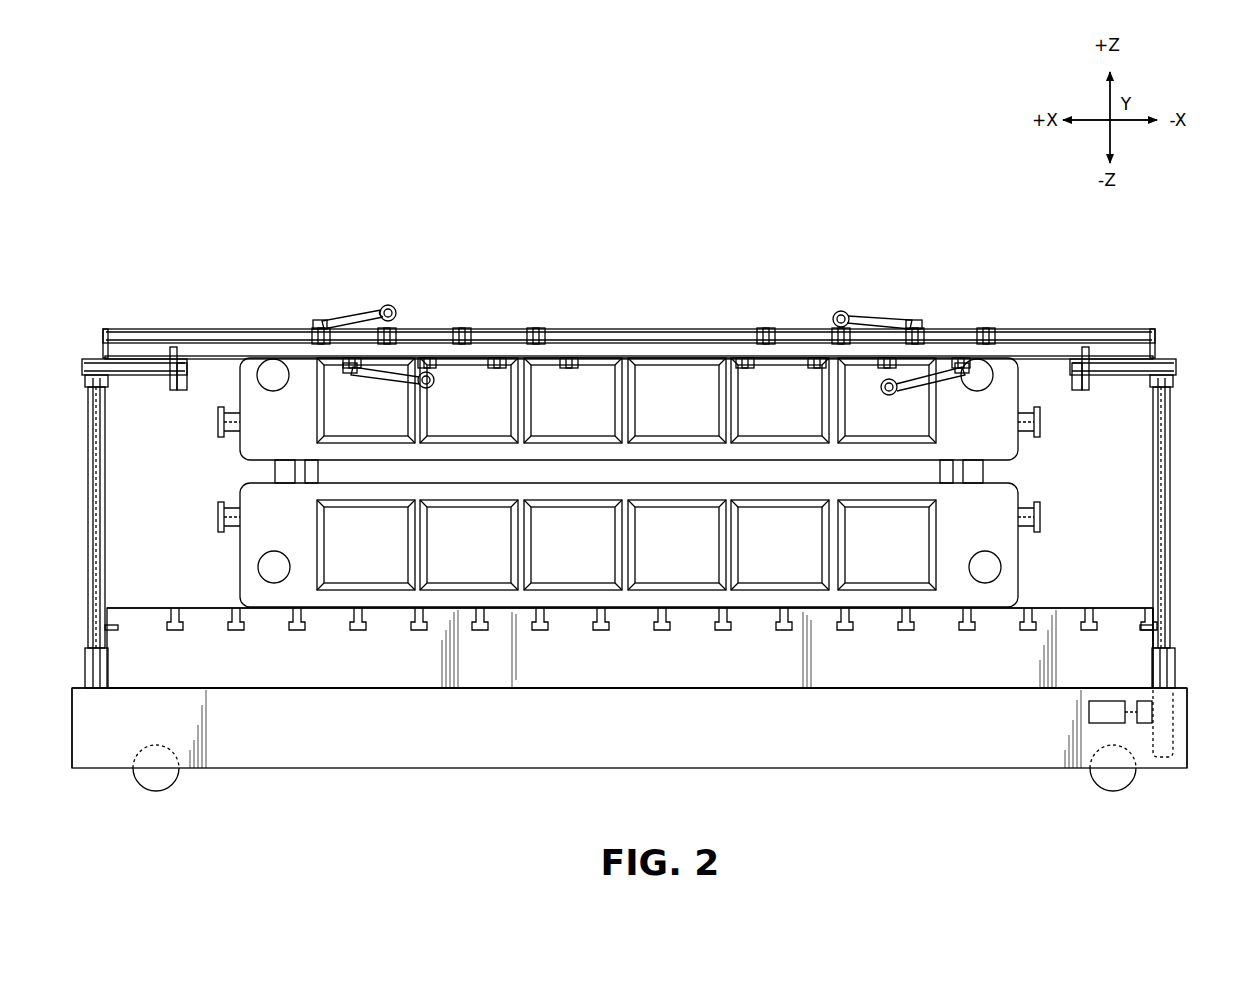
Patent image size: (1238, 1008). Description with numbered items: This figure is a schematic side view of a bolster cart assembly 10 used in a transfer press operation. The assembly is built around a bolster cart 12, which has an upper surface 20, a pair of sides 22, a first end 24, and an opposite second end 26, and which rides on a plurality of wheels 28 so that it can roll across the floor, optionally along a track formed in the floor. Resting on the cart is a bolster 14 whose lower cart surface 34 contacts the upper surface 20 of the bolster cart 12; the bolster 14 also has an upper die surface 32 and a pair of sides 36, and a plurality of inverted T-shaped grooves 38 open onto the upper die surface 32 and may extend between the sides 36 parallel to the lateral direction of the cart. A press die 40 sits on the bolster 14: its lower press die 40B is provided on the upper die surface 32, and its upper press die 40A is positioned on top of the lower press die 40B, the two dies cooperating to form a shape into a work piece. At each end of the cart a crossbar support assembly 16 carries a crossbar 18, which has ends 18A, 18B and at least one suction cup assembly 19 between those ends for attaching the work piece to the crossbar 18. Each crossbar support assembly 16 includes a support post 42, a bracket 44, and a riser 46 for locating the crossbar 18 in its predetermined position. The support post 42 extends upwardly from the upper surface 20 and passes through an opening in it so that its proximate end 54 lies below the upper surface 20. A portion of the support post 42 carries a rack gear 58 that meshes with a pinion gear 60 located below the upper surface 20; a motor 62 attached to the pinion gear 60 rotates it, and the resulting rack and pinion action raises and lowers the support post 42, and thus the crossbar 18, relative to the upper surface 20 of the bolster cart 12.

The bolster cart assembly 10 is at (120, 292).
The bolster cart 12 is at (243, 772).
The bolster 14 is at (683, 658).
The crossbar support assemblies 16 is at (85, 350).
The crossbars 18 is at (602, 327).
The end 18A is at (1157, 345).
The end 18B is at (104, 345).
The suction cup assembly 19 is at (387, 302).
The upper surface 20 is at (83, 681).
The sides 22 is at (458, 736).
The first end 24 is at (1188, 748).
The second end 26 is at (70, 745).
The wheels 28 is at (153, 790).
The upper die surface 32 is at (210, 600).
The lower cart surface 34 is at (312, 690).
The sides 36 is at (887, 672).
The inverted T-shaped grooves 38 is at (600, 632).
The press die 40 is at (213, 480).
The upper press die 40A is at (1020, 450).
The lower press die 40B is at (1020, 552).
The support post 42 is at (92, 475).
The bracket 44 is at (148, 374).
The riser 46 is at (188, 375).
The proximate end 54 is at (1163, 758).
The rack gear 58 is at (105, 500).
The pinion gear 60 is at (1153, 710).
The motor 62 is at (1112, 714).